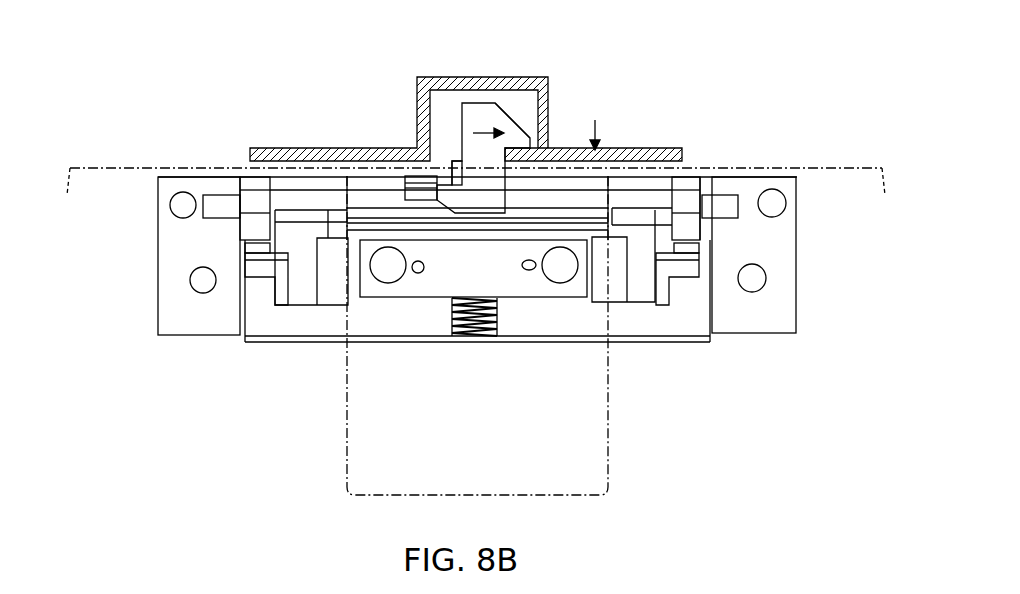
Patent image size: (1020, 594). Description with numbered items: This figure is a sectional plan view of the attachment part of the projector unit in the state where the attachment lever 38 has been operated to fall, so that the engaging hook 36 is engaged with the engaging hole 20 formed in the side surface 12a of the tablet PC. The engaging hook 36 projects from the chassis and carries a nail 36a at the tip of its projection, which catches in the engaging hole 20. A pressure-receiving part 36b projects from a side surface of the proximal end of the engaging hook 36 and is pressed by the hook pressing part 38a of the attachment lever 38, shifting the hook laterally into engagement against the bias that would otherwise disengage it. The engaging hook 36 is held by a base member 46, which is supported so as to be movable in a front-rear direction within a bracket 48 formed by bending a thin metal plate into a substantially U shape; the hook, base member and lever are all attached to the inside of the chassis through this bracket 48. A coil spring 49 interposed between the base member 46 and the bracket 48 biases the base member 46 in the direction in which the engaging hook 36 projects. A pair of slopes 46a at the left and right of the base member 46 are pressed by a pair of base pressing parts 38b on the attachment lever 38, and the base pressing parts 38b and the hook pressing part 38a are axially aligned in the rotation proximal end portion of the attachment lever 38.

The engaging hole 20 is at (417, 110).
The side surface 12a is at (630, 162).
The engaging hook 36 is at (490, 112).
The nail 36a is at (518, 137).
The pressure-receiving part 36b is at (452, 175).
The attachment lever 38 is at (608, 465).
The hook pressing part 38a is at (412, 193).
The base pressing part 38b is at (247, 231).
The base member 46 is at (305, 293).
The slope 46a is at (257, 268).
The bracket 48 is at (785, 262).
The coil spring 49 is at (450, 337).